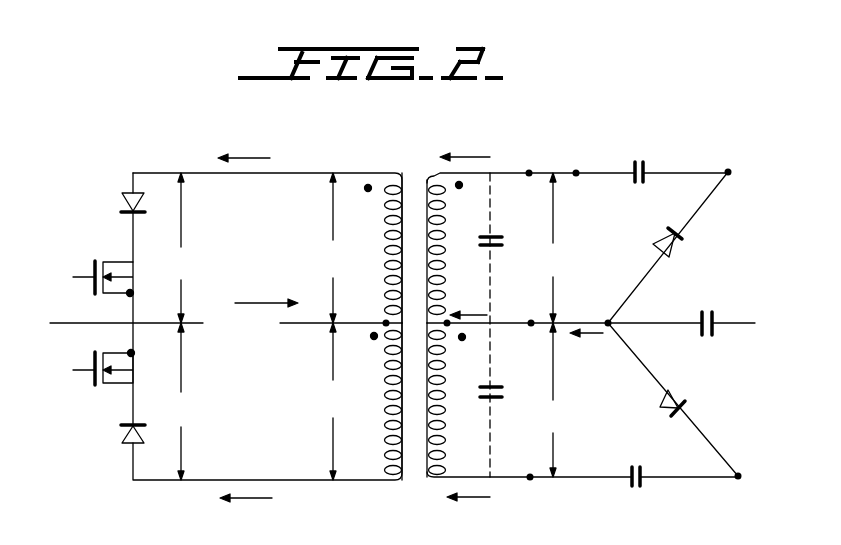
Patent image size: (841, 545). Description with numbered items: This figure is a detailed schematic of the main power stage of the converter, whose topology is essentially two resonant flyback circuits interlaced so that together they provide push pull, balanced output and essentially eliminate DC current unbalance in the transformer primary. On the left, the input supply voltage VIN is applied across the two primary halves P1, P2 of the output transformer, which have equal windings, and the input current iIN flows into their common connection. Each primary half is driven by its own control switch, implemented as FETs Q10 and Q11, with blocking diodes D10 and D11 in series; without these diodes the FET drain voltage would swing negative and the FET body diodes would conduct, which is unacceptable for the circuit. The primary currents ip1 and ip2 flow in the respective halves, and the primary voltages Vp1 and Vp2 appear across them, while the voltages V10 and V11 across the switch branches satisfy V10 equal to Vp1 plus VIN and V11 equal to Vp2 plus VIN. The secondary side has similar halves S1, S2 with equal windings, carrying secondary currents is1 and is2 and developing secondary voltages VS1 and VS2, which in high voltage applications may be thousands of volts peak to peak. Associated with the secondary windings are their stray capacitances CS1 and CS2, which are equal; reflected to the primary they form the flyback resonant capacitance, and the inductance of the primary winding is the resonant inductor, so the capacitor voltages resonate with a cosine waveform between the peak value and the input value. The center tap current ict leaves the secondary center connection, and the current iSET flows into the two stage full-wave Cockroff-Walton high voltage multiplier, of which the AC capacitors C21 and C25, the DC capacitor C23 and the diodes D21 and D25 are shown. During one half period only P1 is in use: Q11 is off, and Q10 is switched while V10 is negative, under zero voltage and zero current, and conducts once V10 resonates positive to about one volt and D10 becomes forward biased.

The blocking diode D10 is at (122, 200).
The control switch Q10 is at (95, 272).
The control switch Q11 is at (108, 385).
The blocking diode D11 is at (120, 437).
The primary half P1 is at (376, 248).
The primary half P2 is at (376, 401).
The secondary half S1 is at (450, 251).
The secondary half S2 is at (453, 400).
The secondary winding stray capacitance CS1 is at (500, 244).
The secondary winding stray capacitance CS2 is at (502, 397).
The AC capacitor C21 is at (650, 150).
The diode D21 is at (680, 247).
The DC capacitor C23 is at (708, 336).
The diode D25 is at (688, 401).
The AC capacitor C25 is at (632, 487).
The voltage across Q10 branch V10 is at (189, 248).
The voltage across Q11 branch V11 is at (189, 401).
The primary P1 voltage Vp1 is at (328, 248).
The primary P2 voltage Vp2 is at (328, 401).
The input supply voltage VIN is at (243, 338).
The secondary S1 voltage VS1 is at (561, 248).
The secondary S2 voltage VS2 is at (563, 400).
The primary P1 current ip1 is at (244, 145).
The primary P2 current ip2 is at (246, 512).
The input current iIN is at (266, 292).
The secondary S1 current is1 is at (465, 142).
The secondary S2 current is2 is at (468, 514).
The center tap current ict is at (468, 303).
The multiplier input current iSET is at (585, 347).